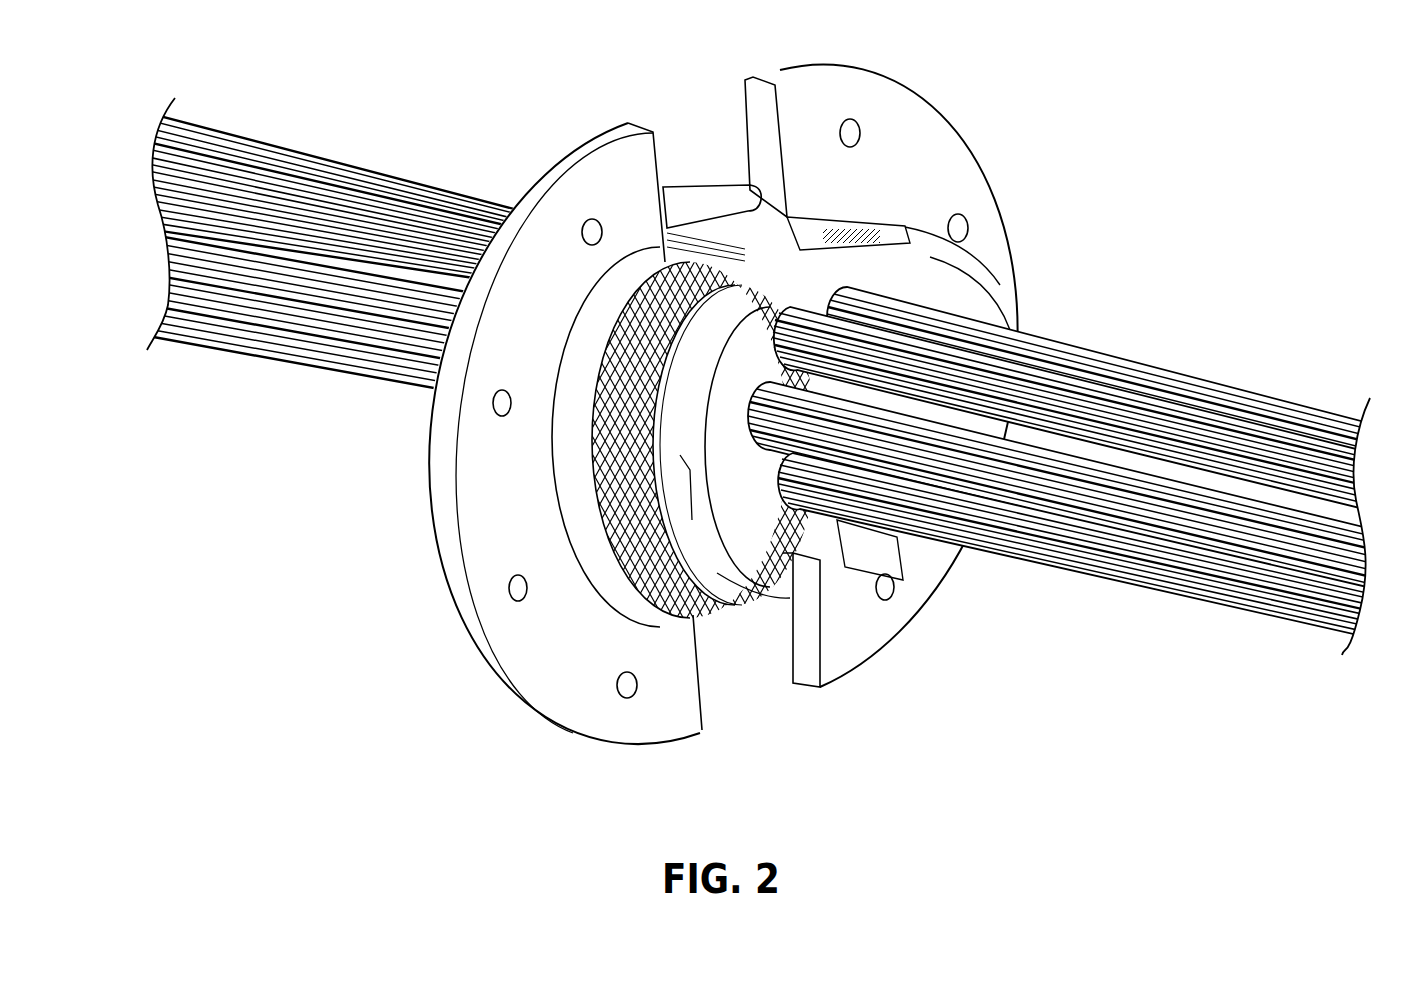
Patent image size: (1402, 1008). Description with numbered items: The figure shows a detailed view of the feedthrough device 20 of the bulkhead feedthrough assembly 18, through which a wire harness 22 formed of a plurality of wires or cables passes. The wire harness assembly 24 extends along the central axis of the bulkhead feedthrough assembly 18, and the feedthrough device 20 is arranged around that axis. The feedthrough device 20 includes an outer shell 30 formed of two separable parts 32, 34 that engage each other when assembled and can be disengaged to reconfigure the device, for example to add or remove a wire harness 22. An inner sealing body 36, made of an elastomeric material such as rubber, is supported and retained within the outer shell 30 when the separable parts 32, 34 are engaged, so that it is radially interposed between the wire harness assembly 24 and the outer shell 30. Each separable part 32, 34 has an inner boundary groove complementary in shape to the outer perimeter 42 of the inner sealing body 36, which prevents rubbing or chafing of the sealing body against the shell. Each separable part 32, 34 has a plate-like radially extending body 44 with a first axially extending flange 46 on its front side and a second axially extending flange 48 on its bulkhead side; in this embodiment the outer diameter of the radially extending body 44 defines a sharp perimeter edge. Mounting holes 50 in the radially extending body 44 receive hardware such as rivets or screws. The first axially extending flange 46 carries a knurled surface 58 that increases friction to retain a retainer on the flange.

The bulkhead feedthrough assembly 18 is at (294, 242).
The feedthrough device 20 is at (649, 405).
The wire harness 22 is at (340, 230).
The wire harness assembly 24 is at (158, 278).
The outer shell 30 is at (565, 668).
The separable part 32 is at (463, 612).
The separable part 34 is at (925, 183).
The inner sealing body 36 is at (810, 287).
The outer perimeter 42 is at (747, 257).
The radially extending body 44 is at (495, 463).
The first axially extending flange 46 is at (583, 497).
The second axially extending flange 48 is at (730, 190).
The mounting hole 50 is at (495, 404).
The knurled surface 58 is at (653, 617).